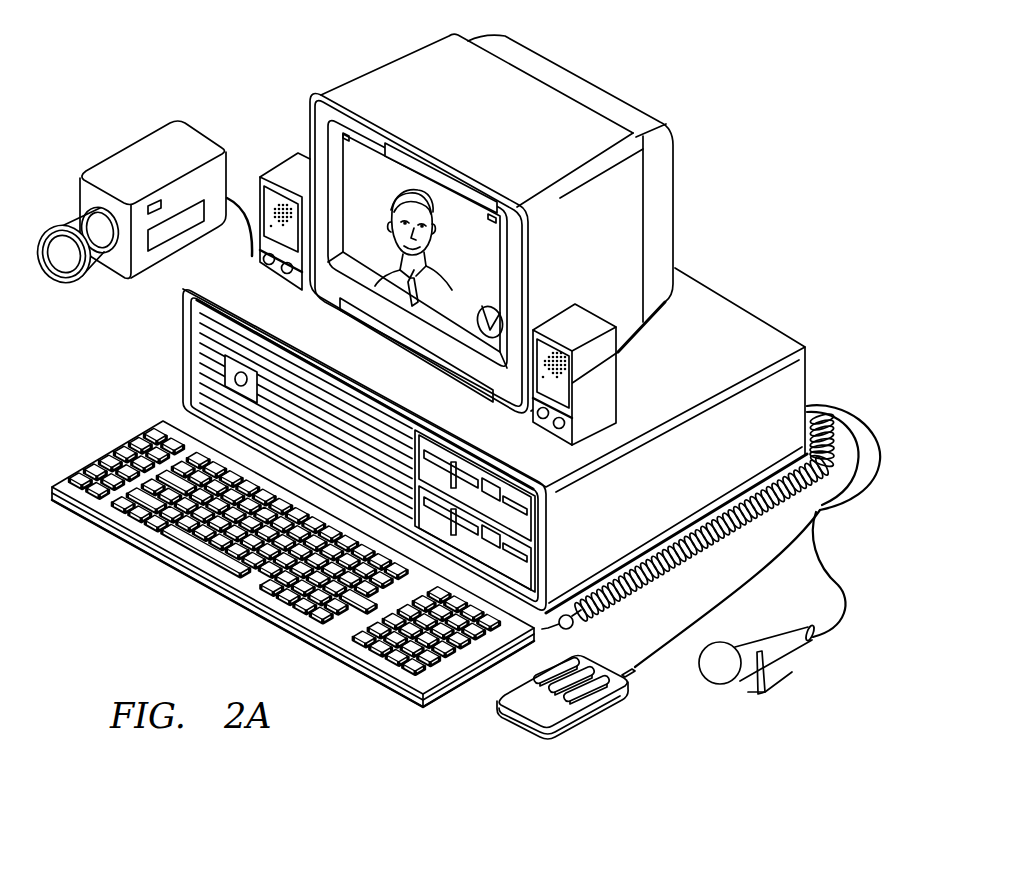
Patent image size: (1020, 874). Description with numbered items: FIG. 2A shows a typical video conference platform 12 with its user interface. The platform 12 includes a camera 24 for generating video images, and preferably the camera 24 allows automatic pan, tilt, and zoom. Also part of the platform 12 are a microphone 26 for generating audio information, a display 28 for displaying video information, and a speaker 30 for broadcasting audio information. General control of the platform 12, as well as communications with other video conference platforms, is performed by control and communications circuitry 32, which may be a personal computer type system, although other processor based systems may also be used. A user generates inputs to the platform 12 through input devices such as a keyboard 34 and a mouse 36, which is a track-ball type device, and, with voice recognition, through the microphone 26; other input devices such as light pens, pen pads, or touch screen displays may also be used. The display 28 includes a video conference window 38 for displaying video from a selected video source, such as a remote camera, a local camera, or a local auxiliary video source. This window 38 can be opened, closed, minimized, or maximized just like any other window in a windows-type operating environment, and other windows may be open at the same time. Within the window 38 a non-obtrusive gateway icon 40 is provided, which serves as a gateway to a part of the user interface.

The video conference platform 12 is at (229, 69).
The camera 24 is at (134, 154).
The microphone 26 is at (757, 642).
The display 28 is at (424, 50).
The speaker 30 is at (284, 168).
The control and communications circuitry 32 is at (738, 322).
The keyboard 34 is at (122, 444).
The mouse 36 is at (593, 717).
The video conference window 38 is at (412, 144).
The gateway icon 40 is at (490, 307).